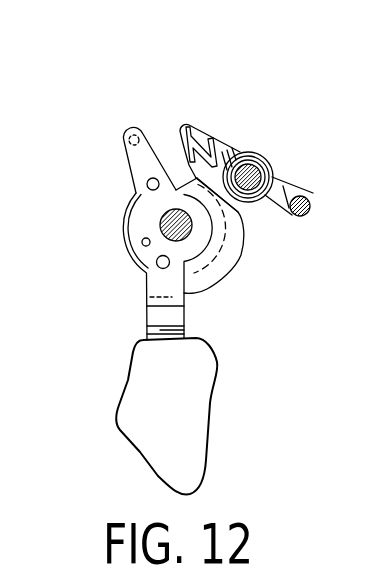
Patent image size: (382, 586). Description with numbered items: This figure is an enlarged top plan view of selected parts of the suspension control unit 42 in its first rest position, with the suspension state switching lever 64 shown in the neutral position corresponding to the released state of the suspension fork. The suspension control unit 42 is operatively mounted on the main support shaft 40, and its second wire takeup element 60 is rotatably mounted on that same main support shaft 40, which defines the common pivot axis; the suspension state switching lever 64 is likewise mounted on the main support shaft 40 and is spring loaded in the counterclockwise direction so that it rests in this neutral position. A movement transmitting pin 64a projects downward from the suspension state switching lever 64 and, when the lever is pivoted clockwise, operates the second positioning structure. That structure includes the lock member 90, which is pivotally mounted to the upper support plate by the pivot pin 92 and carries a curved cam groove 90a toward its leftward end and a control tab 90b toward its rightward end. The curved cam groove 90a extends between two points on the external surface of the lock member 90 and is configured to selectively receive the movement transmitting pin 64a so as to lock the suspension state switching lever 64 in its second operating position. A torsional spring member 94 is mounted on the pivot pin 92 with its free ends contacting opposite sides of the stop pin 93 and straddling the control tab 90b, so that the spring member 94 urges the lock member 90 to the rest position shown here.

The suspension control unit 42 is at (141, 84).
The main support shaft 40 is at (178, 221).
The second wire takeup element 60 is at (116, 205).
The suspension state switching lever 64 is at (116, 390).
The movement transmitting pin 64a is at (130, 134).
The lock member 90 is at (184, 114).
The curved cam groove 90a is at (217, 150).
The control tab 90b is at (267, 198).
The pivot pin 92 is at (250, 177).
The stop pin 93 is at (306, 212).
The spring member 94 is at (287, 179).